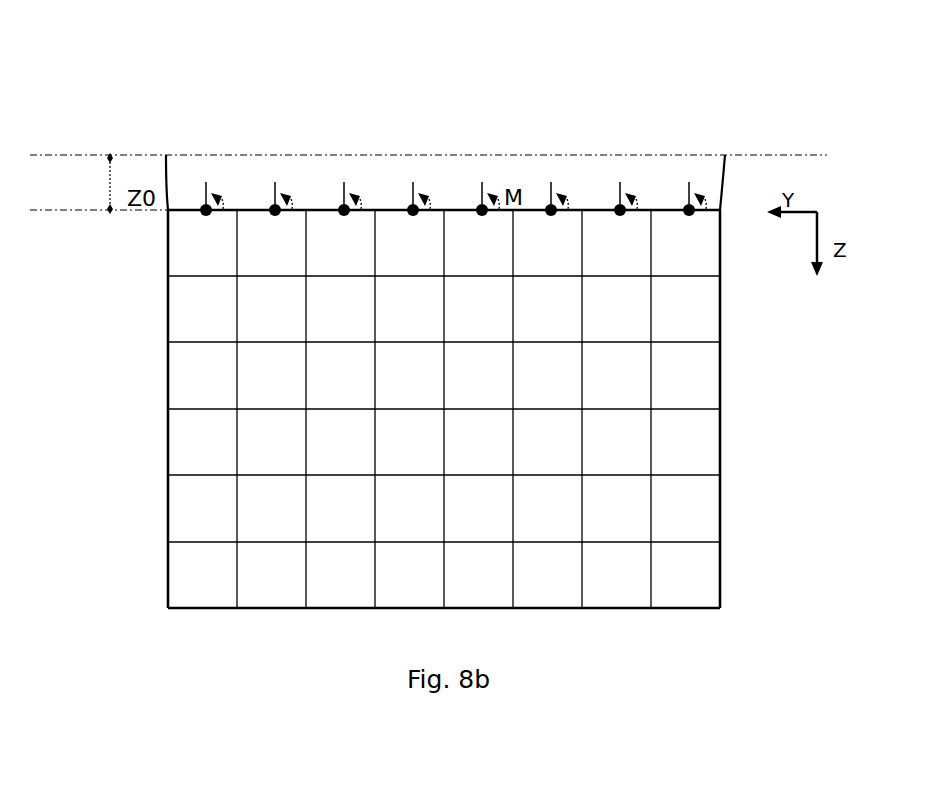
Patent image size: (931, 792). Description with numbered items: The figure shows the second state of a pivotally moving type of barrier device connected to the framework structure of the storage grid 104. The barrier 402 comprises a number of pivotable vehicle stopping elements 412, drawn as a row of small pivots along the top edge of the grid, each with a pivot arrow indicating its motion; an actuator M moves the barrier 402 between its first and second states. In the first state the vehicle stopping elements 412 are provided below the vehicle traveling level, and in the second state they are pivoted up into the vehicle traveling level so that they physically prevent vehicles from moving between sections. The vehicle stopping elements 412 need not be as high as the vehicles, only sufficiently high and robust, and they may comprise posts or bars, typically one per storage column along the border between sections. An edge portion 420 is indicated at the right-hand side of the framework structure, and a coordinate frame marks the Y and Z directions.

The panel with grid 104 is at (118, 378).
The barrier 402 is at (184, 163).
The vehicle stopping element 412 is at (483, 183).
The side wall 420 is at (722, 178).